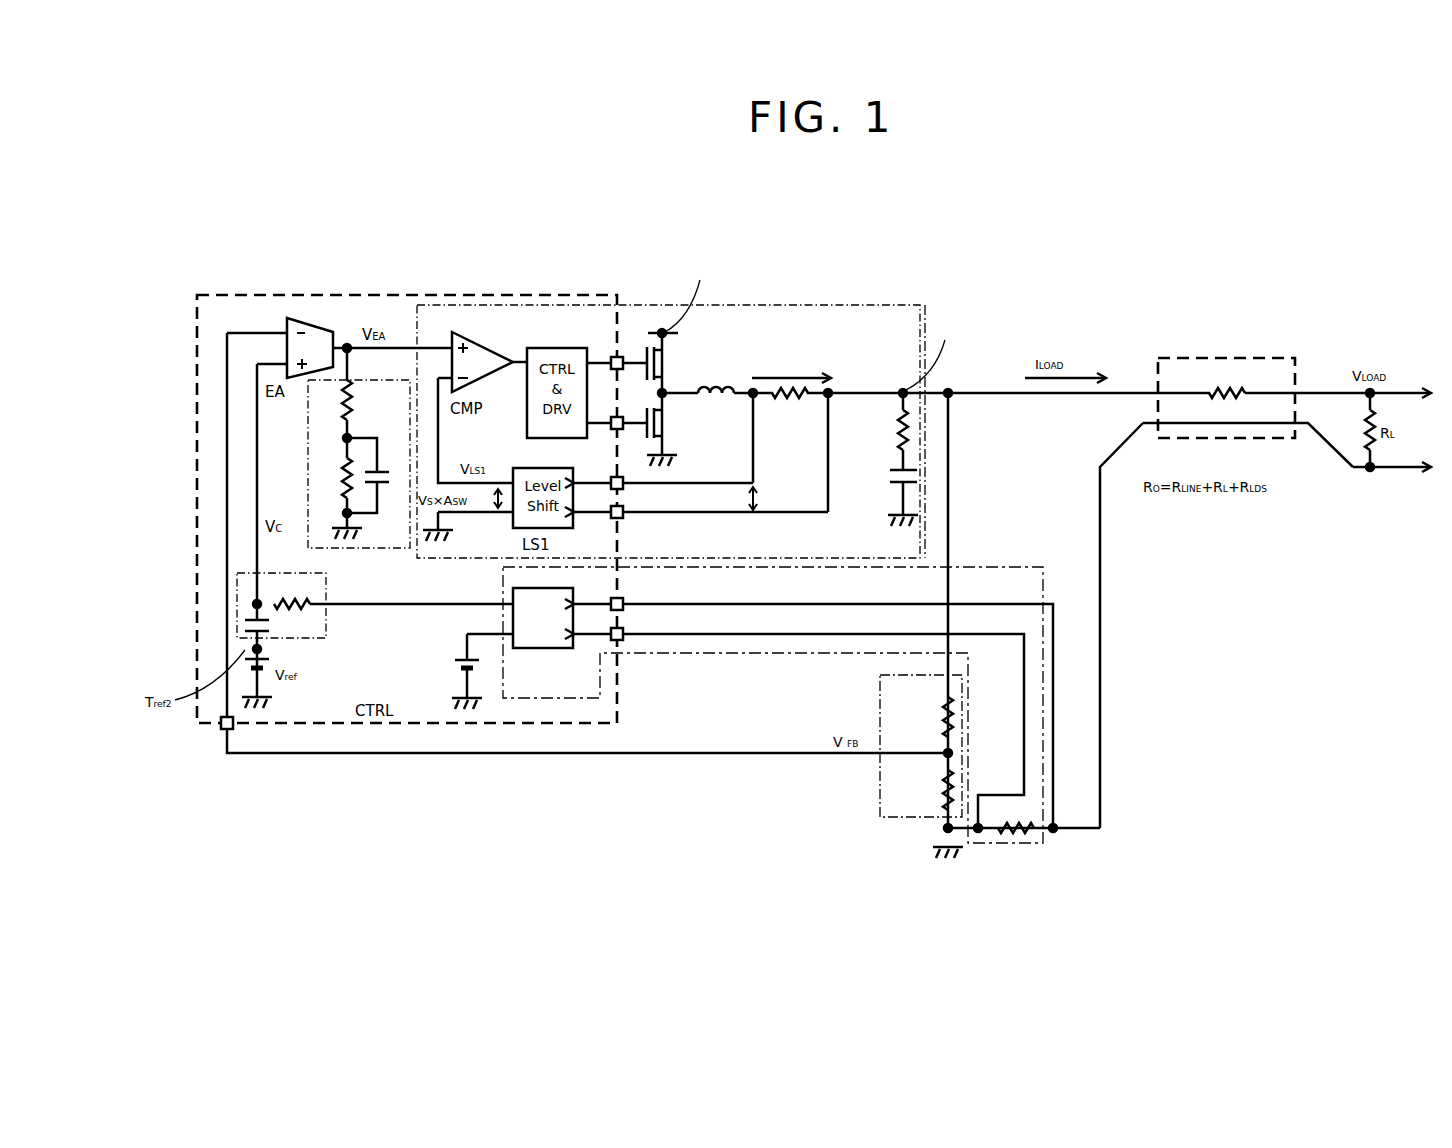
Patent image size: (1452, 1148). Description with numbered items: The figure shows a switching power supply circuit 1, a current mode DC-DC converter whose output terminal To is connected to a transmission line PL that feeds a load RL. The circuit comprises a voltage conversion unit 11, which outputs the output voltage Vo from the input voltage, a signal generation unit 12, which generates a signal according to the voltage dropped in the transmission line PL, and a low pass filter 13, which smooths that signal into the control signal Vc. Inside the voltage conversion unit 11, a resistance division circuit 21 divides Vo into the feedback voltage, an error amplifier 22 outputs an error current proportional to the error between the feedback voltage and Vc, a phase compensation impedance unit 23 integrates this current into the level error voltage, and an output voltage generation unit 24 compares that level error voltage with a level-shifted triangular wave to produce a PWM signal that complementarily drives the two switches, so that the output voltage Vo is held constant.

The switching power supply circuit 1 is at (1133, 266).
The voltage conversion unit 11 is at (780, 282).
The signal generation unit 12 is at (1010, 566).
The low pass filter 13 is at (326, 613).
The resistance division circuit 21 is at (880, 796).
The error amplifier 22 is at (313, 325).
The phase compensation impedance unit 23 is at (362, 551).
The output voltage generation unit 24 is at (893, 305).